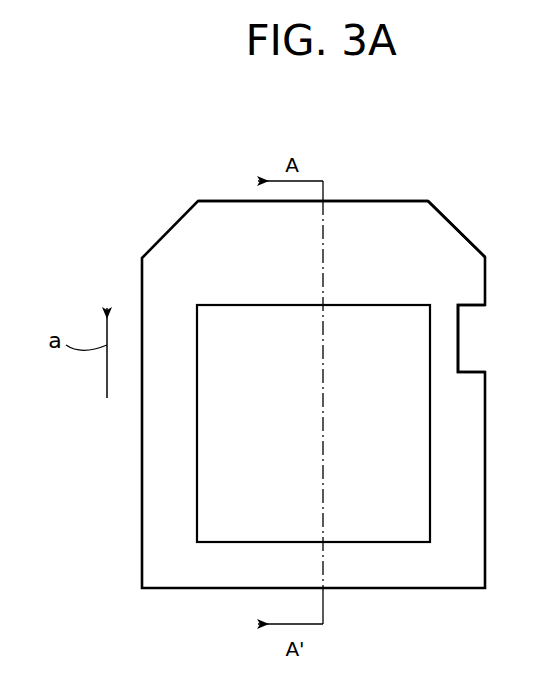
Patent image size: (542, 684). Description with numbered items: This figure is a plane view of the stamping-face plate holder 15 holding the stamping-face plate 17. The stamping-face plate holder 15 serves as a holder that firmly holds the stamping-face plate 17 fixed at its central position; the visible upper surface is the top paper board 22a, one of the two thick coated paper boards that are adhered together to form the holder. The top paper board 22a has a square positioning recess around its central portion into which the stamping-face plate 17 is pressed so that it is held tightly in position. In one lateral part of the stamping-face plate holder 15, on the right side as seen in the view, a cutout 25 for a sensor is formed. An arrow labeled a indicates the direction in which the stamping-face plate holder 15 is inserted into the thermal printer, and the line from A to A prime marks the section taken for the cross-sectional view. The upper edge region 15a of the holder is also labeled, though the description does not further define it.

The stamping-face plate holder 15 is at (430, 198).
The top edge of card body 15a is at (363, 201).
The top paper board 22a is at (463, 227).
The stamping-face plate 17 is at (403, 322).
The cutout 25 is at (472, 340).